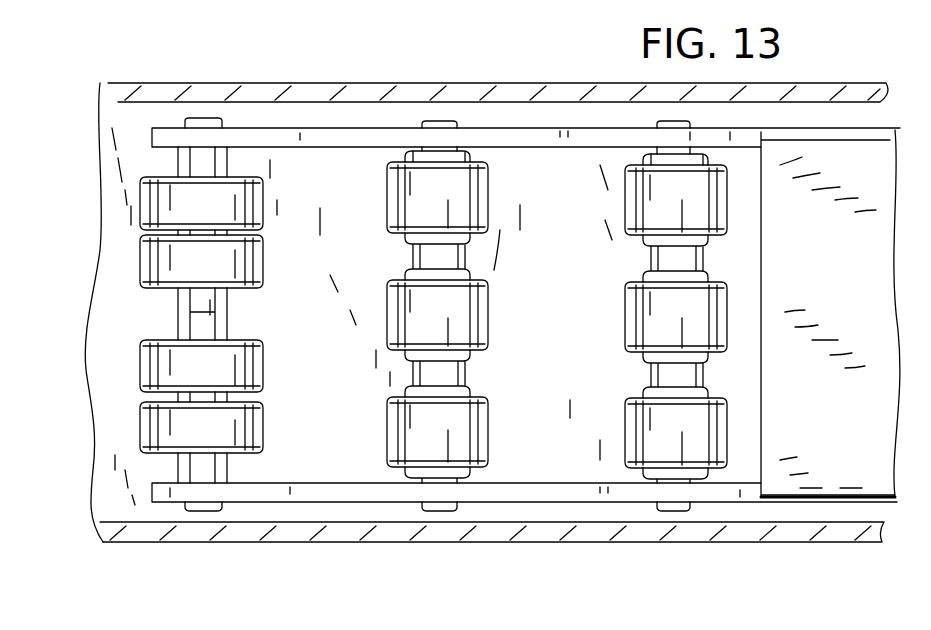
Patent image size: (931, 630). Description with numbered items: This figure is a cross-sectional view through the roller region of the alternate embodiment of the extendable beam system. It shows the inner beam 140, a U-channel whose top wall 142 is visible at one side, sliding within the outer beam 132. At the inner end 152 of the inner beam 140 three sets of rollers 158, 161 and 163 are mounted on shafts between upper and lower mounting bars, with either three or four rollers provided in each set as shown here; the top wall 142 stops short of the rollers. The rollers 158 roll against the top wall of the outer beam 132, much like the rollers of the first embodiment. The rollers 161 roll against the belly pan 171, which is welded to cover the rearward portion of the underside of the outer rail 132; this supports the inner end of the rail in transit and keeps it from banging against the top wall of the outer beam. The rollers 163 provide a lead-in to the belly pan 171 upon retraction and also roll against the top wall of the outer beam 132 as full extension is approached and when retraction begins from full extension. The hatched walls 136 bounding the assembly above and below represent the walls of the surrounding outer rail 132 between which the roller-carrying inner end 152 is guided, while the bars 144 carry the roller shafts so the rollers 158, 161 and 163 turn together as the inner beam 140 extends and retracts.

The outer beam 132 is at (539, 552).
The guide rail 136 is at (478, 82).
The inner beam 140 is at (298, 510).
The top wall 142 is at (870, 280).
The mounting bar 144 is at (368, 150).
The inner end 152 is at (128, 428).
The rollers 158 is at (603, 248).
The rollers 161 is at (488, 200).
The rollers 163 is at (263, 205).
The belly pan 171 is at (133, 334).